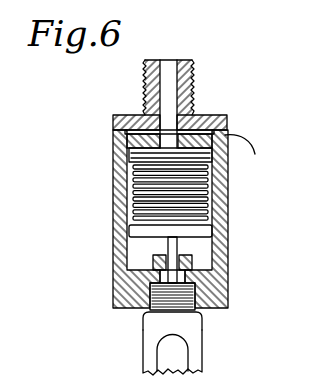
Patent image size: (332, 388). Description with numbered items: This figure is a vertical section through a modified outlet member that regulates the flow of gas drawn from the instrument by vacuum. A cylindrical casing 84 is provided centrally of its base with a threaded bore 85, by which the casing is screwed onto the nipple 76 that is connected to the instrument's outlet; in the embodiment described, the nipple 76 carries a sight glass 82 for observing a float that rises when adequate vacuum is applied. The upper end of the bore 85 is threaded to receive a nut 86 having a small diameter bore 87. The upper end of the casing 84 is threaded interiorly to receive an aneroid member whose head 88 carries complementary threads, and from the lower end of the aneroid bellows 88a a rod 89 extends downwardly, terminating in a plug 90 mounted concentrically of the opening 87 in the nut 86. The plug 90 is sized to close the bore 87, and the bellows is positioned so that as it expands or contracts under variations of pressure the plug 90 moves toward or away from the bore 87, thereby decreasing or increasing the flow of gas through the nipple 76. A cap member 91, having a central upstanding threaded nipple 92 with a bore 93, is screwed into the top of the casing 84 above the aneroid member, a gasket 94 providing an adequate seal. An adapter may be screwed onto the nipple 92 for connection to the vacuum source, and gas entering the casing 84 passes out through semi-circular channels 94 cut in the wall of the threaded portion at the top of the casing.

The nipple 76 is at (195, 335).
The sight glass 82 is at (178, 358).
The cylindrical casing 84 is at (118, 196).
The threaded bore 85 is at (155, 318).
The nut 86 is at (188, 260).
The small diameter bore 87 is at (190, 302).
The head of aneroid member 88 is at (228, 172).
The aneroid bellows 88a is at (215, 212).
The rod 89 is at (168, 244).
The plug 90 is at (153, 262).
The cap member 91 is at (223, 123).
The threaded nipple 92 is at (193, 92).
The bore 93 is at (166, 70).
The gasket 94 is at (125, 117).